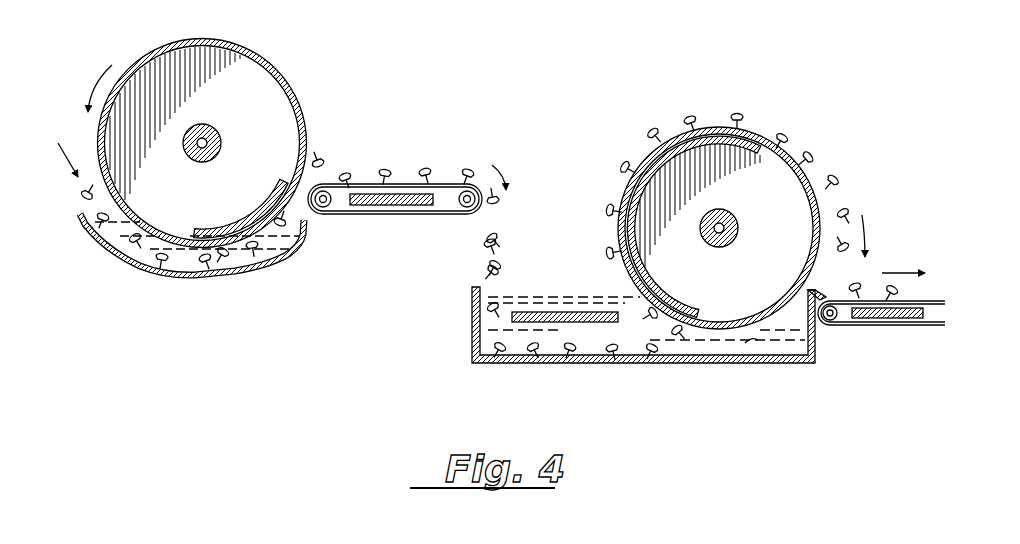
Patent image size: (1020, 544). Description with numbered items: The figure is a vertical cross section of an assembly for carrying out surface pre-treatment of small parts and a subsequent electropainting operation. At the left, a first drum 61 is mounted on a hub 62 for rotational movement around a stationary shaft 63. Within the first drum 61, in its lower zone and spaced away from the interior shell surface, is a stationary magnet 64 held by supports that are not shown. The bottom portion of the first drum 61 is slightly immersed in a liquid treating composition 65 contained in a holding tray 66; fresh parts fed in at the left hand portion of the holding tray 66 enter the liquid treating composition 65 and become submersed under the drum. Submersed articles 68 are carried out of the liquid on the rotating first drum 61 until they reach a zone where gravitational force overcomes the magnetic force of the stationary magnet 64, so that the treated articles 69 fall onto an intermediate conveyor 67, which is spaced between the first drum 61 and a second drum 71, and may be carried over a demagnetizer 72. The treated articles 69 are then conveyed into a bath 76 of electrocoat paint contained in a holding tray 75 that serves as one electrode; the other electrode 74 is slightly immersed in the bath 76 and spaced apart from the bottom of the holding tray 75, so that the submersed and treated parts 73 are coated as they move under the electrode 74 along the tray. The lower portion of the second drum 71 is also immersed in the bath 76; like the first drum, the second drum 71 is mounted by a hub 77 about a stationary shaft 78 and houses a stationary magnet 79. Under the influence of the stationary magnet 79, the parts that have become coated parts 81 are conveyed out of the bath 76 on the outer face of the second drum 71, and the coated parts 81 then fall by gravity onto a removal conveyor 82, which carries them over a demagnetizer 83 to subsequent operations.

The first drum 61 is at (305, 122).
The hub 62 is at (222, 155).
The stationary shaft 63 is at (212, 128).
The stationary magnet 64 is at (216, 222).
The liquid treating composition 65 is at (242, 252).
The holding tray 66 is at (299, 238).
The intermediate conveyor 67 is at (446, 187).
The submersed articles 68 is at (182, 258).
The treated articles 69 is at (347, 177).
The second drum 71 is at (624, 197).
The demagnetizer 72 is at (398, 207).
The submersed and treated parts 73 is at (625, 350).
The electrode 74 is at (583, 310).
The holding tray 75 is at (472, 322).
The bath 76 is at (756, 343).
The hub 77 is at (724, 246).
The stationary shaft 78 is at (733, 220).
The stationary magnet 79 is at (698, 310).
The coated parts 81 is at (847, 212).
The removal conveyor 82 is at (927, 300).
The demagnetizer 83 is at (878, 318).